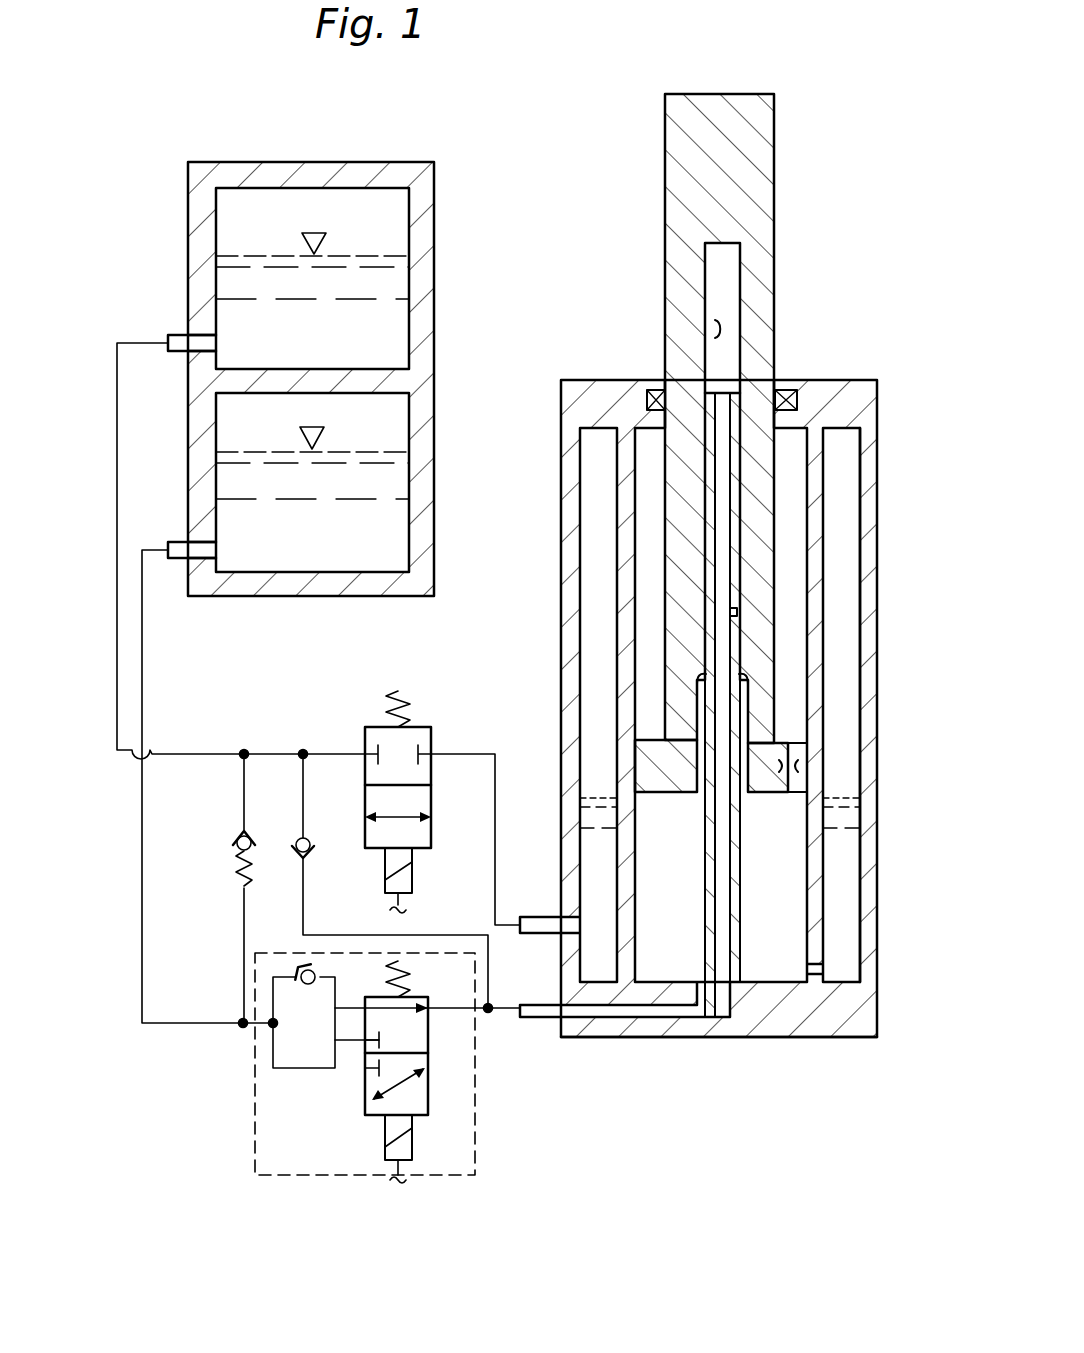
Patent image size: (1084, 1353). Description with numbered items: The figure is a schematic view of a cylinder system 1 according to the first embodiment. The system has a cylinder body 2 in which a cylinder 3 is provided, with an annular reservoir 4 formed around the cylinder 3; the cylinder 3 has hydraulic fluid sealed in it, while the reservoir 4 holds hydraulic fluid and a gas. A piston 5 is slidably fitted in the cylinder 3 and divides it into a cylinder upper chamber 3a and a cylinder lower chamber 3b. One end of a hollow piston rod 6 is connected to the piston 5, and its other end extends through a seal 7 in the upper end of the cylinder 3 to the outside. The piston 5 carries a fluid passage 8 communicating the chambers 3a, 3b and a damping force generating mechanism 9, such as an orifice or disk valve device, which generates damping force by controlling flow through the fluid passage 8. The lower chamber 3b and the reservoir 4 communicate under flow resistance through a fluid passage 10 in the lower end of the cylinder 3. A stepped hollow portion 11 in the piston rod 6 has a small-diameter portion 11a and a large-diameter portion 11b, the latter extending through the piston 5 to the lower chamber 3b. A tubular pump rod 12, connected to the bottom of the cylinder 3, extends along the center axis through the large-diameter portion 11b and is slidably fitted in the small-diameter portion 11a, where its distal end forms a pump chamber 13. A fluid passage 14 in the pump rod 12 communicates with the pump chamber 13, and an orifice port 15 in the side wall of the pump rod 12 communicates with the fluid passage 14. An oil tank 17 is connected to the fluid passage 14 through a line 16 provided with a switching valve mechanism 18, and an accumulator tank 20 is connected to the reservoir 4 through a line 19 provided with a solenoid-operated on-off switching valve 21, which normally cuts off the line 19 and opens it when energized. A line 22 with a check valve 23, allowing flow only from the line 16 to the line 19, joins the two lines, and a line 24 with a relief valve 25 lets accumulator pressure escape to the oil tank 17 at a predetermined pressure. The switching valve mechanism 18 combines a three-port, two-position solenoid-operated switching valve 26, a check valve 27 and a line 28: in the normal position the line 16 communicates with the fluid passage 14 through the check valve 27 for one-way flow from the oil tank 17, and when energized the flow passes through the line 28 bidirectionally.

The cylinder system 1 is at (552, 112).
The cylinder body 2 is at (864, 370).
The cylinder 3 is at (878, 450).
The cylinder upper chamber 3a is at (793, 520).
The cylinder lower chamber 3b is at (787, 933).
The annular reservoir 4 is at (847, 567).
The piston 5 is at (640, 762).
The hollow piston rod 6 is at (748, 143).
The seal 7 is at (787, 382).
The fluid passage 8 is at (800, 783).
The damping force generating mechanism 9 is at (796, 757).
The fluid passage 10 is at (830, 982).
The stepped hollow portion 11 is at (707, 243).
The small-diameter portion 11a is at (716, 327).
The large-diameter portion 11b is at (697, 683).
The tubular pump rod 12 is at (738, 862).
The pump chamber 13 is at (723, 277).
The fluid passage 14 is at (726, 833).
The orifice port 15 is at (738, 612).
The line 16 is at (178, 1027).
The oil tank 17 is at (385, 420).
The switching valve mechanism 18 is at (352, 1175).
The line 19 is at (188, 752).
The accumulator tank 20 is at (395, 218).
The switching valve 21 is at (421, 727).
The line 22 is at (306, 873).
The check valve 23 is at (307, 838).
The line 24 is at (243, 936).
The relief valve 25 is at (236, 843).
The solenoid-operated switching valve 26 is at (428, 1113).
The check valve 27 is at (296, 975).
The line 28 is at (300, 1068).